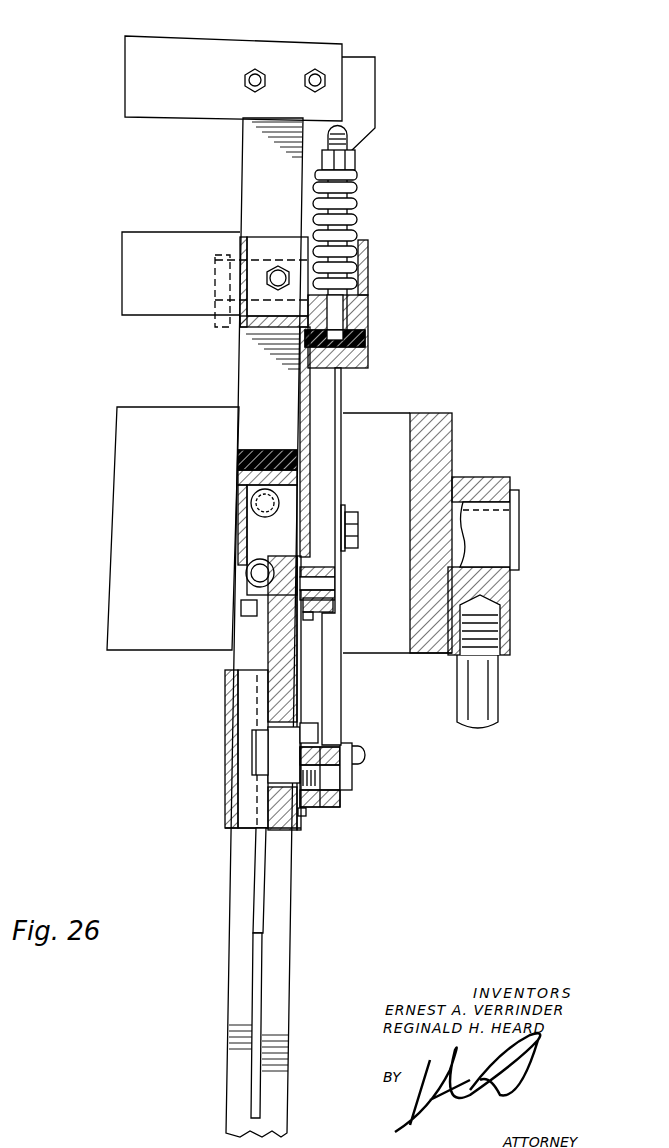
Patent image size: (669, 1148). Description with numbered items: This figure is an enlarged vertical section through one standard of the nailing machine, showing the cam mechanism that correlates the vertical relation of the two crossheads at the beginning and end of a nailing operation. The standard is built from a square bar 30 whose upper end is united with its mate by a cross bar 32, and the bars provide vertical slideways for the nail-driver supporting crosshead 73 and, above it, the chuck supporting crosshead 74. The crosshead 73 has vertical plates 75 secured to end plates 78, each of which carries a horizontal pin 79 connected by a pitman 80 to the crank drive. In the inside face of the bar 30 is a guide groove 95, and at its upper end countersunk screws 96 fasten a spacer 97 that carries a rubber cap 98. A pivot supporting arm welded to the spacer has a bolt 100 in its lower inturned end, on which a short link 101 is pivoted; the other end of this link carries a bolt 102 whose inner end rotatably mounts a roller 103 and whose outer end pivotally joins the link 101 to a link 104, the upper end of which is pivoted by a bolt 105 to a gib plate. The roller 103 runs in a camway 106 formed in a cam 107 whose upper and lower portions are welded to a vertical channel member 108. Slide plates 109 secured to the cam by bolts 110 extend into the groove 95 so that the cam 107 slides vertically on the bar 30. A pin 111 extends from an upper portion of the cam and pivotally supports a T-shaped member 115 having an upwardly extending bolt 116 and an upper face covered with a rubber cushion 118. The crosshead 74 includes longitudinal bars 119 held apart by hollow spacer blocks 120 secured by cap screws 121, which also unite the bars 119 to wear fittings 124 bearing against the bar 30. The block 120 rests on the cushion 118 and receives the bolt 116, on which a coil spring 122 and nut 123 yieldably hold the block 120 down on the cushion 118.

The bars 30 is at (283, 190).
The cross bars 32 is at (237, 52).
The nail-driver supporting crosshead 73 is at (146, 400).
The chuck supporting crosshead 74 is at (148, 226).
The vertical plates 75 is at (170, 450).
The end plates 78 is at (452, 445).
The horizontal pin 79 is at (506, 541).
The pitman 80 is at (490, 692).
The guide grooves 95 is at (258, 984).
The countersunk screws 96 is at (262, 507).
The spacer 97 is at (238, 490).
The rubber cap 98 is at (238, 460).
The bolt 100 is at (336, 778).
The short link 101 is at (305, 812).
The bolt 102 is at (364, 754).
The roller 103 is at (282, 757).
The link 104 is at (338, 628).
The bolt 105 is at (357, 526).
The camway 106 is at (256, 734).
The cam 107 is at (268, 662).
The vertical channel member 108 is at (225, 695).
The slide plates 109 is at (262, 881).
The bolts 110 is at (308, 617).
The pin 111 is at (335, 582).
The T-shaped member 115 is at (312, 403).
The bolt 116 is at (348, 140).
The cushion 118 is at (360, 340).
The longitudinal bars 119 is at (179, 310).
The hollow spacer blocks 120 is at (368, 264).
The cap screws 121 is at (283, 268).
The coil springs 122 is at (360, 236).
The nuts 123 is at (353, 170).
The wear fittings 124 is at (230, 255).